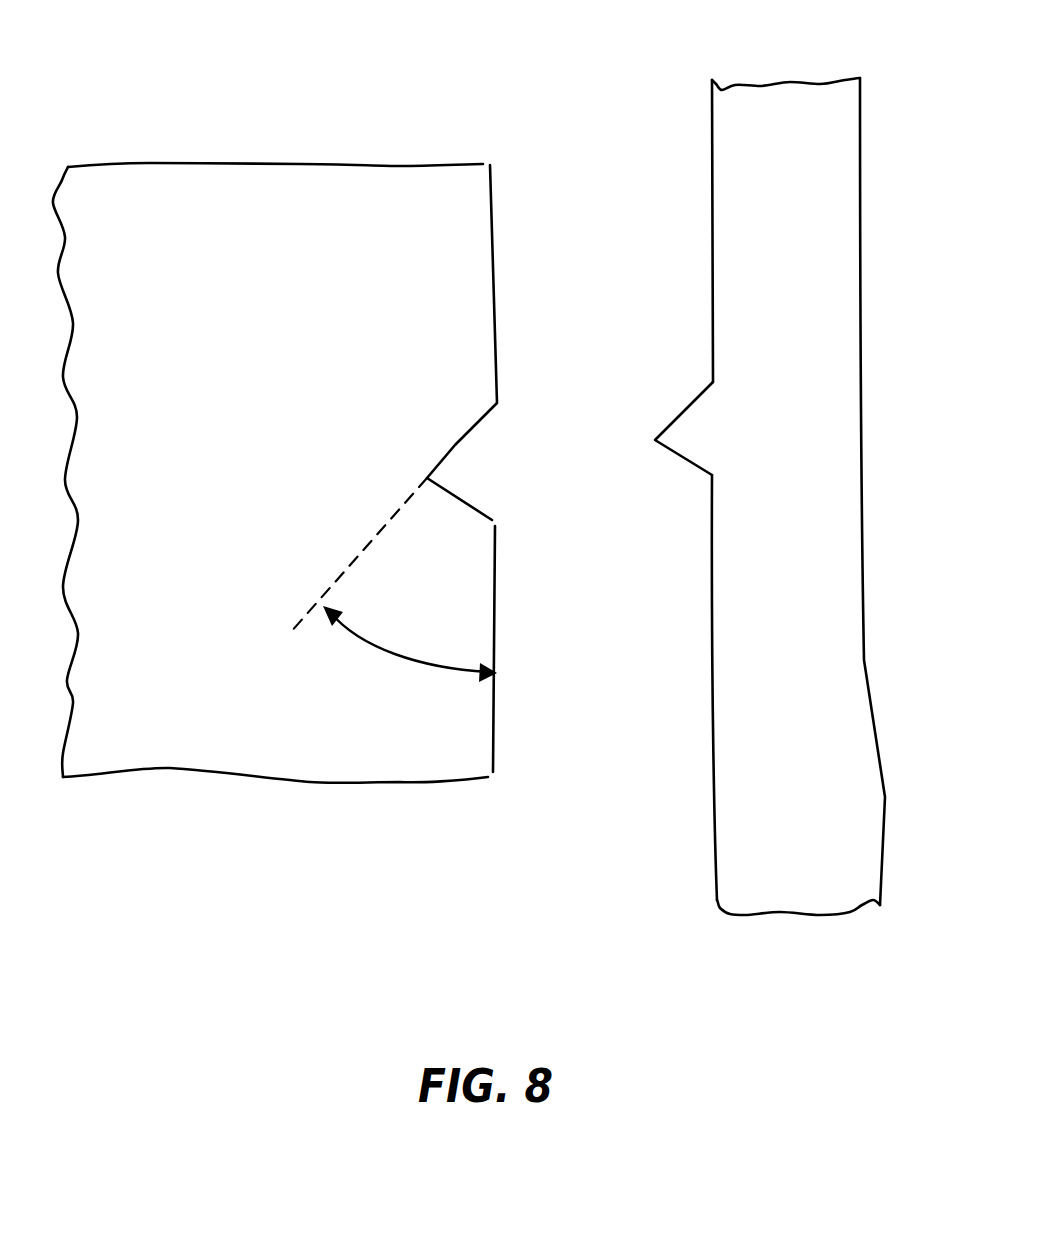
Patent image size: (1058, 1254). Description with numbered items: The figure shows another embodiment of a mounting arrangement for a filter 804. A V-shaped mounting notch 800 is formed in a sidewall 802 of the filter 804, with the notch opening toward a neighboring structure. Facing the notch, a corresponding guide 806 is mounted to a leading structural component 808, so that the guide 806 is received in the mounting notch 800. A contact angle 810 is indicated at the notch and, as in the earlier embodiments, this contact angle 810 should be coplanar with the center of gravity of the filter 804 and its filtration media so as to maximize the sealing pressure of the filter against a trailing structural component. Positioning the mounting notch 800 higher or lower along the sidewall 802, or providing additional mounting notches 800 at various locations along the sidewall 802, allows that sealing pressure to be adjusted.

The V-shaped mounting notch 800 is at (457, 447).
The sidewall 802 is at (423, 207).
The filter 804 is at (422, 96).
The guide 806 is at (697, 442).
The leading structural component 808 is at (808, 130).
The contact angle 810 is at (428, 618).